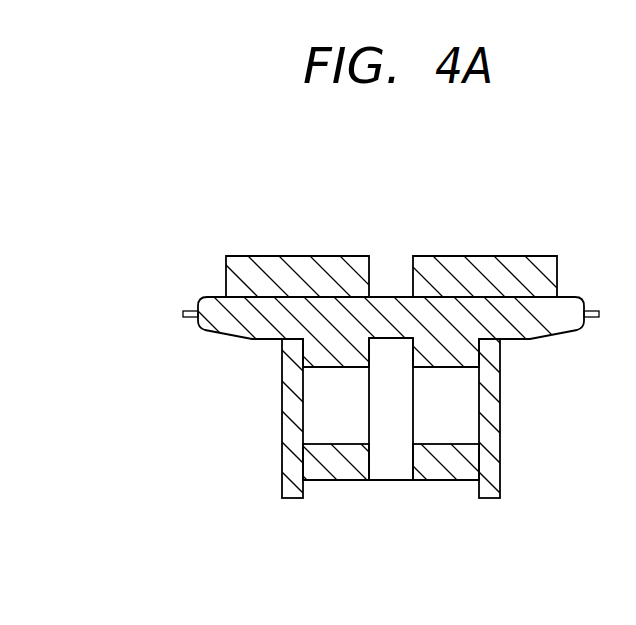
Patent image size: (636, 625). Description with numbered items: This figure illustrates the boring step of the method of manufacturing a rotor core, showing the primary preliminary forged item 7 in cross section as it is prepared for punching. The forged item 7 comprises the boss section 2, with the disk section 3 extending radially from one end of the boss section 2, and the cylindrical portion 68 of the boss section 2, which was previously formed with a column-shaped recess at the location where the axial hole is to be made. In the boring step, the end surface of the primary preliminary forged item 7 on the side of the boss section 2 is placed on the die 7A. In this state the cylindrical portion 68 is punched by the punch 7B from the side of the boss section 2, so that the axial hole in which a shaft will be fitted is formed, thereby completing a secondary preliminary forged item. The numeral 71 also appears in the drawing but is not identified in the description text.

The upper member 71 is at (455, 263).
The disk section 3 is at (513, 297).
The primary preliminary forged item 7 is at (583, 295).
The boss section 2 is at (339, 367).
The die 7A is at (502, 428).
The punch 7B is at (400, 397).
The cylindrical portion 68 is at (371, 353).